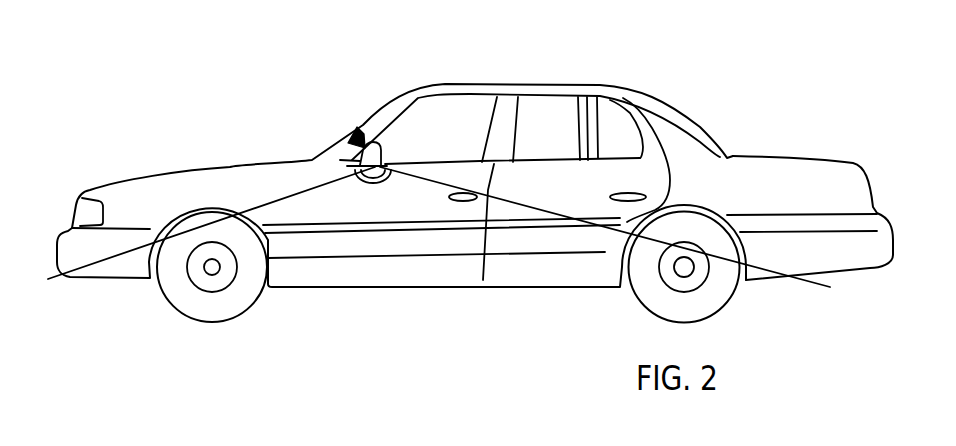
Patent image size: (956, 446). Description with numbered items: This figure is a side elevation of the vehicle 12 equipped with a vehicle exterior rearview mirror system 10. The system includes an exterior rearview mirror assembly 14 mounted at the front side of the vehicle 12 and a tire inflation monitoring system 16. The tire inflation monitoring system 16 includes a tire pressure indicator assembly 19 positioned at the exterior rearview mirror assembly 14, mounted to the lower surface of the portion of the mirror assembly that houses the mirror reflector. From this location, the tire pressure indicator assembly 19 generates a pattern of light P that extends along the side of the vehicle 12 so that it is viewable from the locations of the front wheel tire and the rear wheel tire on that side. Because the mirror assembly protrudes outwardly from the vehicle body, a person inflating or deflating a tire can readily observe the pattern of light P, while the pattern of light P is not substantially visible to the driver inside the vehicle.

The vehicle exterior rearview mirror system 10 is at (233, 91).
The vehicle 12 is at (813, 158).
The exterior rearview mirror assembly 14 is at (370, 148).
The tire inflation monitoring system 16 is at (362, 138).
The tire pressure indicator assembly 19 is at (392, 183).
The pattern of light P is at (260, 203).